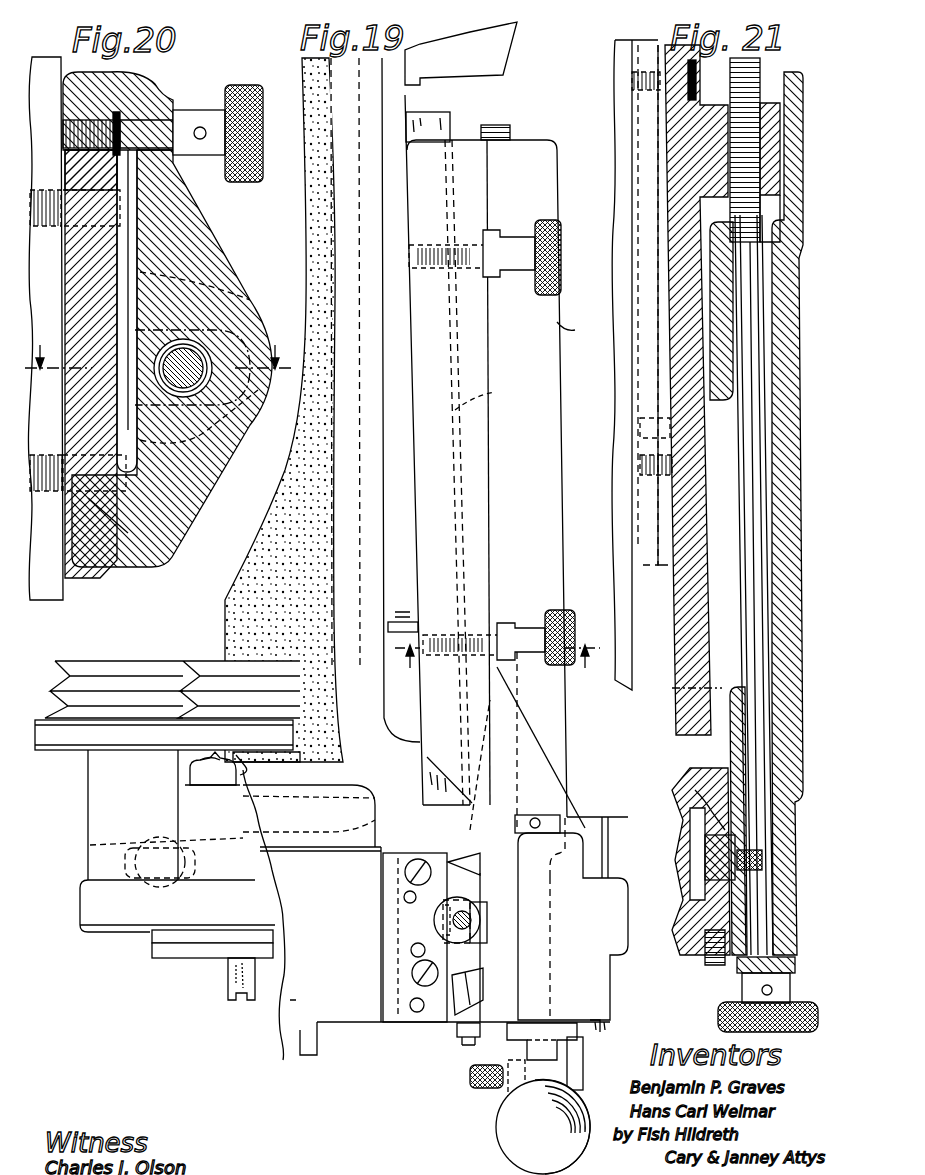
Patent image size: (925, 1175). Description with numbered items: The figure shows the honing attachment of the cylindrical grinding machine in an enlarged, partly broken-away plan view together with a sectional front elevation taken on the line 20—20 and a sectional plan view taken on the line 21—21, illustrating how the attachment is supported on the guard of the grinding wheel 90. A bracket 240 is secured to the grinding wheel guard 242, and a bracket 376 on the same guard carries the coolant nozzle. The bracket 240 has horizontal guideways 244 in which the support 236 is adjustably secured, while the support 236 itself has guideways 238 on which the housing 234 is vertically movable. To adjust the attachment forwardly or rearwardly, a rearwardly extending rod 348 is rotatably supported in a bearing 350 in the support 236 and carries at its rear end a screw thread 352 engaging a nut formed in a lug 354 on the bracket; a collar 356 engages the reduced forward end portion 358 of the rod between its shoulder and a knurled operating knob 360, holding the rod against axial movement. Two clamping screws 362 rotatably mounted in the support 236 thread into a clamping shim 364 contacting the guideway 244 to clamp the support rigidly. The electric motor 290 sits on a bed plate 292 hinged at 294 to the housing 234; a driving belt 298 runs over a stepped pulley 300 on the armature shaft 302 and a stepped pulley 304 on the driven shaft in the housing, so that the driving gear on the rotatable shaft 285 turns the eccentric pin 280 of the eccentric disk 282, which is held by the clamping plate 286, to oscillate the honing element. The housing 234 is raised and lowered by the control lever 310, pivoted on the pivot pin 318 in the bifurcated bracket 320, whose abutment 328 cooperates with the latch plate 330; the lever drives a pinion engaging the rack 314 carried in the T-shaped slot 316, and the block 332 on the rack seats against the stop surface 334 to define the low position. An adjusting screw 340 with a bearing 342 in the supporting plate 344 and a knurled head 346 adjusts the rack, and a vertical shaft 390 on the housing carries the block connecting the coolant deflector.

In FIG. 19, the section line 20— 20 is at (499, 671).
In FIG. 20, the section line 21— 21 is at (158, 344).
In FIG. 19, the grinding wheel 90 is at (230, 605).
In FIG. 19, the housing 234 is at (185, 808).
In FIG. 21, the housing 234 is at (690, 790).
In FIG. 20, the support 236 is at (150, 84).
In FIG. 19, the support 236 is at (536, 540).
In FIG. 21, the support 236 is at (798, 790).
In FIG. 19, the guideways 238 is at (470, 868).
In FIG. 21, the guideways 238 is at (712, 790).
In FIG. 20, the bracket 240 is at (90, 275).
In FIG. 19, the bracket 240 is at (432, 118).
In FIG. 21, the bracket 240 is at (682, 160).
In FIG. 20, the grinding wheel guard 242 is at (42, 64).
In FIG. 19, the grinding wheel guard 242 is at (400, 492).
In FIG. 21, the grinding wheel guard 242 is at (655, 518).
In FIG. 20, the horizontal guideways 244 is at (85, 172).
In FIG. 19, the eccentric pin 280 is at (237, 985).
In FIG. 19, the eccentric disk 282 is at (228, 965).
In FIG. 19, the rotatable shaft 285 is at (190, 765).
In FIG. 19, the clamping plate 286 is at (165, 955).
In FIG. 19, the electric motor 290 is at (300, 1003).
In FIG. 19, the bed plate 292 is at (386, 834).
In FIG. 19, the hinge 294 is at (415, 1040).
In FIG. 19, the driving belt 298 is at (78, 740).
In FIG. 19, the stepped pulley 300 is at (212, 670).
In FIG. 19, the armature shaft 302 is at (245, 765).
In FIG. 19, the stepped pulley 304 is at (120, 670).
In FIG. 19, the control lever 310 is at (518, 1123).
In FIG. 19, the rack 314 is at (483, 990).
In FIG. 19, the T-shaped slot 316 is at (443, 944).
In FIG. 21, the T-shaped slot 316 is at (690, 858).
In FIG. 19, the pivot pin 318 is at (583, 1070).
In FIG. 19, the bifurcated bracket 320 is at (513, 1082).
In FIG. 19, the abutment 328 is at (553, 1022).
In FIG. 19, the latch plate 330 is at (498, 1030).
In FIG. 19, the block 332 is at (535, 815).
In FIG. 21, the stop surface 334 is at (705, 840).
In FIG. 19, the adjusting screw 340 is at (470, 903).
In FIG. 19, the bearing 342 is at (480, 912).
In FIG. 19, the supporting plate 344 is at (383, 885).
In FIG. 19, the knurled head 346 is at (443, 918).
In FIG. 20, the rod 348 is at (172, 380).
In FIG. 21, the rod 348 is at (750, 560).
In FIG. 21, the bearing 350 is at (775, 890).
In FIG. 20, the screw thread 352 is at (205, 330).
In FIG. 19, the screw thread 352 is at (510, 130).
In FIG. 21, the screw thread 352 is at (738, 58).
In FIG. 20, the lug 354 is at (128, 360).
In FIG. 21, the lug 354 is at (768, 105).
In FIG. 21, the collar 356 is at (748, 975).
In FIG. 21, the reduced forward end portion 358 is at (745, 995).
In FIG. 19, the knurled operating knob 360 is at (470, 1082).
In FIG. 21, the knurled operating knob 360 is at (822, 1025).
In FIG. 20, the clamping screws 362 is at (243, 182).
In FIG. 19, the clamping screws 362 is at (548, 220).
In FIG. 20, the clamping shim 364 is at (80, 117).
In FIG. 19, the clamping shim 364 is at (495, 392).
In FIG. 19, the bracket 376 is at (470, 52).
In FIG. 19, the vertical shaft 390 is at (125, 850).